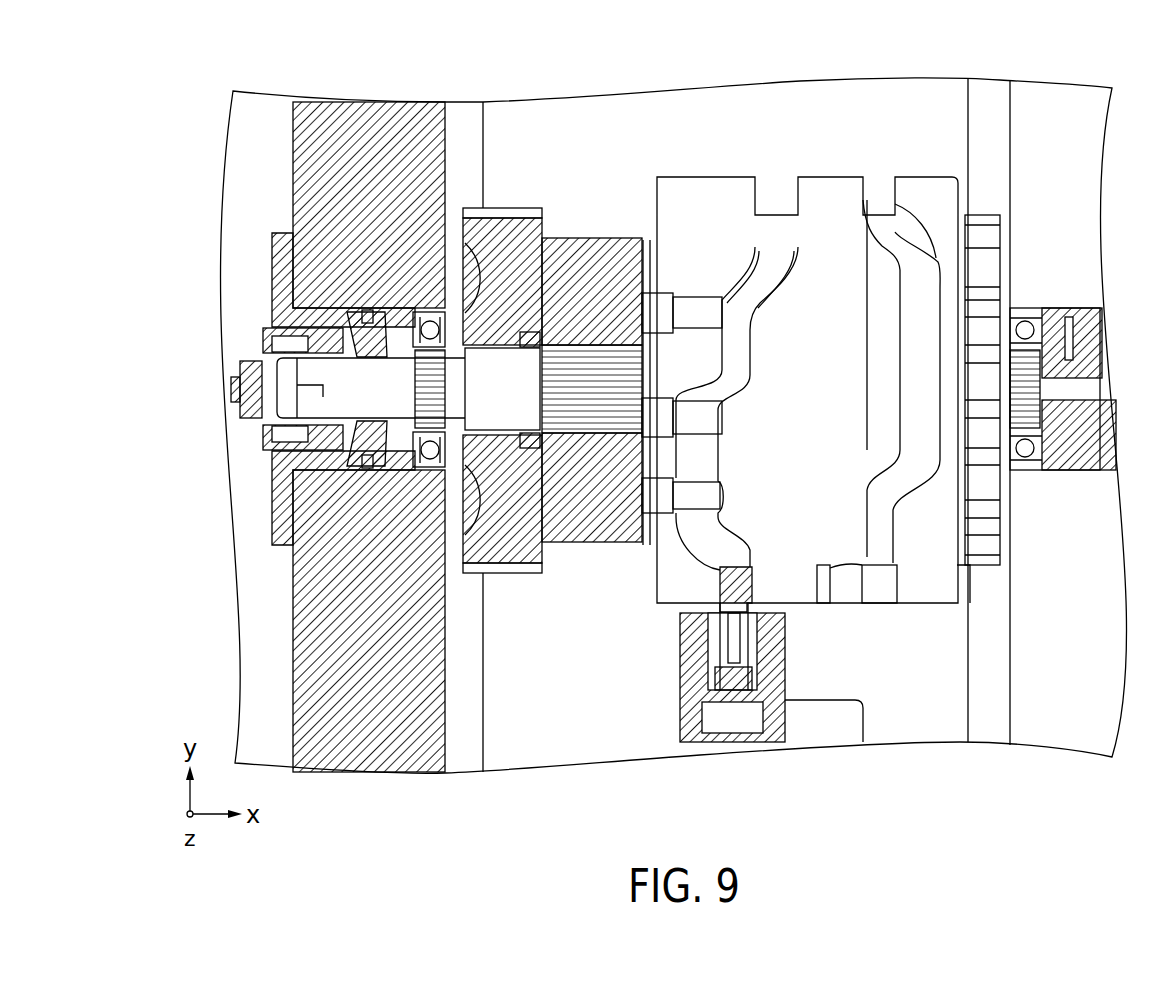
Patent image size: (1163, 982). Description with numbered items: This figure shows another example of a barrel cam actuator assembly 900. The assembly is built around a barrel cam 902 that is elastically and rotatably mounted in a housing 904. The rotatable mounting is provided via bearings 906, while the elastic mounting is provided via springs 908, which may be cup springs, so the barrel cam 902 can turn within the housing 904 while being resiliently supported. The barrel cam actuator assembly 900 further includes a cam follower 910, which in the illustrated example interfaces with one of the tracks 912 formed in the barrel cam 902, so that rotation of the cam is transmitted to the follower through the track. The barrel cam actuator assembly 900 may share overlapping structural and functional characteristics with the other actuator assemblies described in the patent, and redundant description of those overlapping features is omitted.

The barrel cam actuator assembly 900 is at (138, 199).
The barrel cam 902 is at (828, 148).
The housing 904 is at (200, 134).
The bearings 906 is at (430, 278).
The springs 908 is at (387, 420).
The cam follower 910 is at (732, 782).
The tracks 912 is at (777, 242).